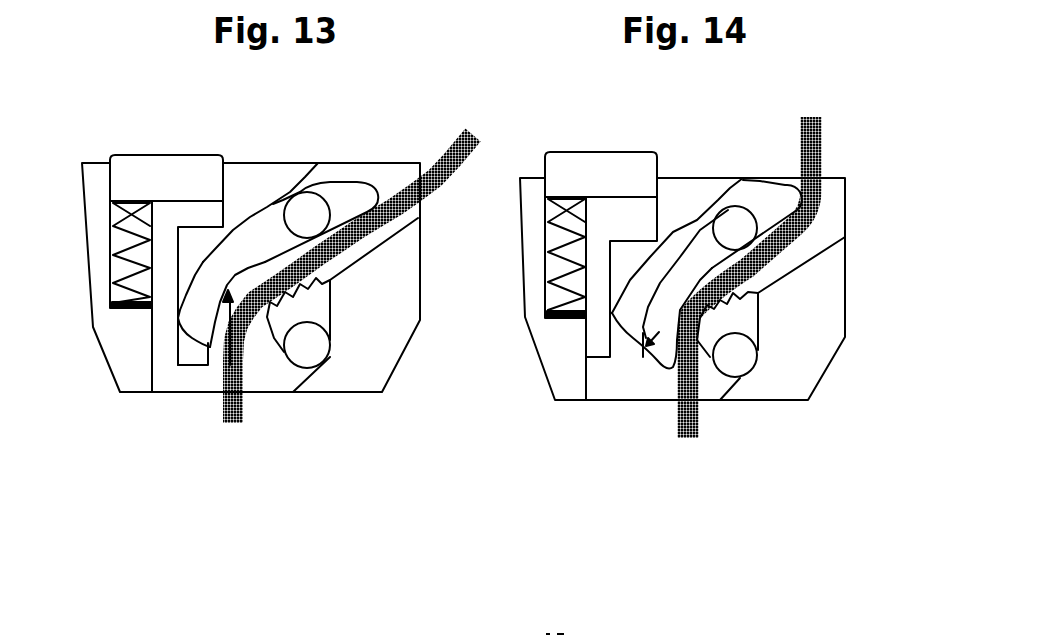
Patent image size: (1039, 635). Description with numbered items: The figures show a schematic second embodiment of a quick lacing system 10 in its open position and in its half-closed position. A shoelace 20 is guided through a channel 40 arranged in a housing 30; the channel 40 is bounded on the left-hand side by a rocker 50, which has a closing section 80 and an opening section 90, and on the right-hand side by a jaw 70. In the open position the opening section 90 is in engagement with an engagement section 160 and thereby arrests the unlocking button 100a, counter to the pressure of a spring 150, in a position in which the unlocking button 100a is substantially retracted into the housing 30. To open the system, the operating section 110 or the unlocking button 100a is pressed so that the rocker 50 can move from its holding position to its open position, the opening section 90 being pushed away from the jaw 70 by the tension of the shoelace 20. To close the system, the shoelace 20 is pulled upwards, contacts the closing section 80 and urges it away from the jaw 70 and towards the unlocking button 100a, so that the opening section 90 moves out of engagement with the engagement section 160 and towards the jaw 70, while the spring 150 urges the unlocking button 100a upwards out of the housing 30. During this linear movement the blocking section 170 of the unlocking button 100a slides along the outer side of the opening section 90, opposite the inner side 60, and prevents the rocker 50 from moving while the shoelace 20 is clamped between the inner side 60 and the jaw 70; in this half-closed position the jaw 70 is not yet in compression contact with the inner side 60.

In FIG. 13, the quick lacing system 10 is at (188, 108).
In FIG. 14, the quick lacing system 10 is at (618, 92).
In FIG. 13, the shoelace 20 is at (229, 420).
In FIG. 14, the shoelace 20 is at (683, 440).
In FIG. 13, the housing 30 is at (122, 352).
In FIG. 14, the housing 30 is at (558, 368).
In FIG. 13, the channel 40 is at (373, 305).
In FIG. 14, the channel 40 is at (808, 312).
In FIG. 13, the rocker 50 is at (205, 351).
In FIG. 14, the rocker 50 is at (670, 330).
In FIG. 13, the inner side 60 is at (219, 372).
In FIG. 14, the inner side 60 is at (678, 400).
In FIG. 13, the jaw 70 is at (318, 318).
In FIG. 14, the jaw 70 is at (747, 320).
In FIG. 13, the closing section 80 is at (358, 198).
In FIG. 14, the closing section 80 is at (782, 198).
In FIG. 13, the opening section 90 is at (198, 315).
In FIG. 14, the opening section 90 is at (660, 350).
In FIG. 13, the unlocking button 100a is at (145, 165).
In FIG. 14, the unlocking button 100a is at (597, 167).
In FIG. 13, the operating section 110 is at (178, 314).
In FIG. 14, the operating section 110 is at (618, 229).
In FIG. 13, the spring 150 is at (123, 252).
In FIG. 14, the spring 150 is at (552, 264).
In FIG. 13, the engagement section 160 is at (192, 332).
In FIG. 14, the engagement section 160 is at (633, 327).
In FIG. 13, the blocking section 170 is at (214, 357).
In FIG. 14, the blocking section 170 is at (760, 265).